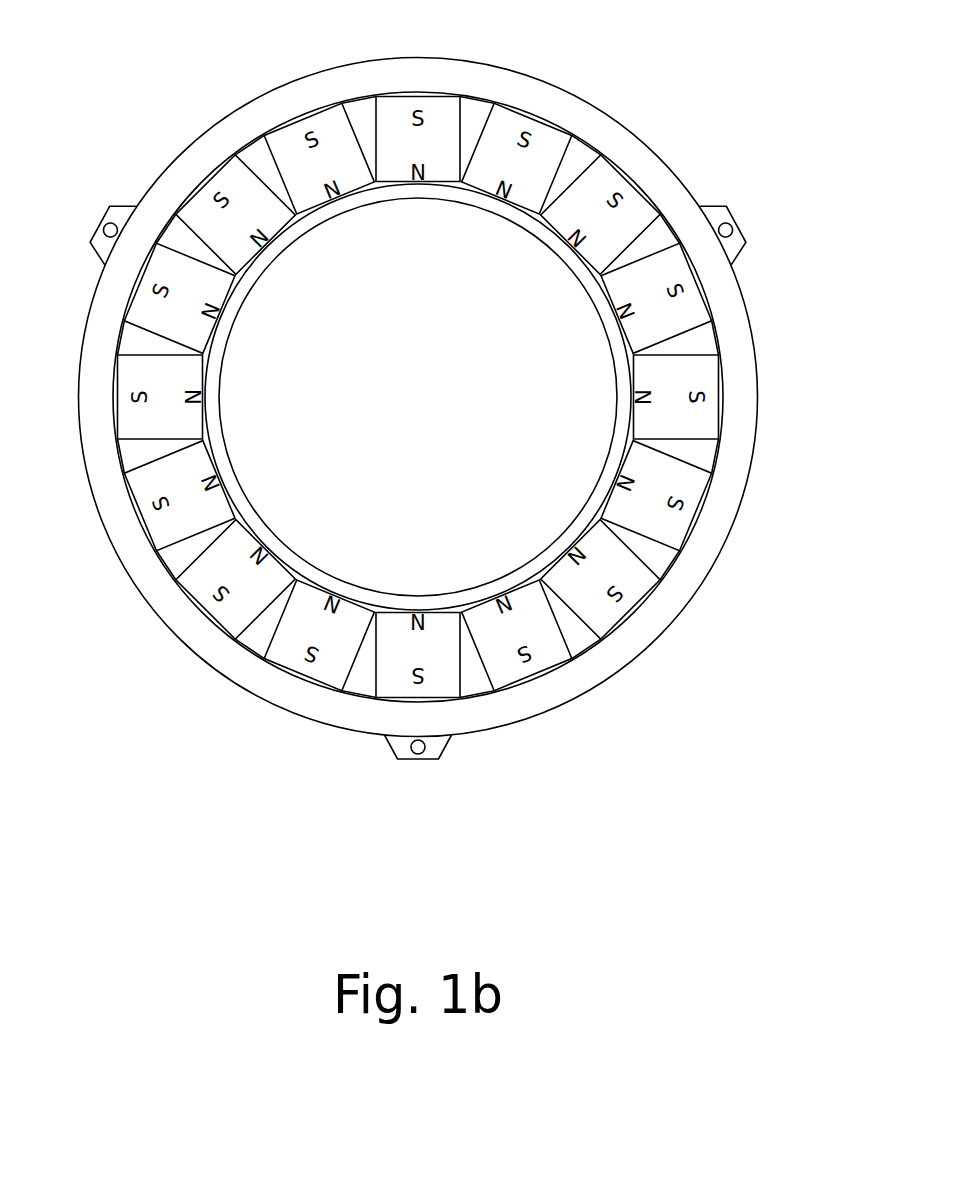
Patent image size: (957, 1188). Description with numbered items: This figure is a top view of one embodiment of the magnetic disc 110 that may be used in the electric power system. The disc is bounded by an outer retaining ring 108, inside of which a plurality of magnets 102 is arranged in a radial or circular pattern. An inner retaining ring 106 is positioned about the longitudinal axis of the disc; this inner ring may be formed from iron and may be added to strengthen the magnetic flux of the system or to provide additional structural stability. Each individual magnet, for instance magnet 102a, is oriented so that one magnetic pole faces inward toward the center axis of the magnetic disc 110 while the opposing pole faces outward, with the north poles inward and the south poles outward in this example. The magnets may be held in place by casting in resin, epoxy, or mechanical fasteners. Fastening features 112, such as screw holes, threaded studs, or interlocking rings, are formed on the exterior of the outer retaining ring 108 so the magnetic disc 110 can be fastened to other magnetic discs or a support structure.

The plurality of magnets 102 is at (538, 642).
The magnet 102a is at (210, 577).
The inner retaining ring 106 is at (551, 242).
The outer retaining ring 108 is at (287, 107).
The magnetic disc 110 is at (427, 472).
The fastening features 112 is at (725, 217).